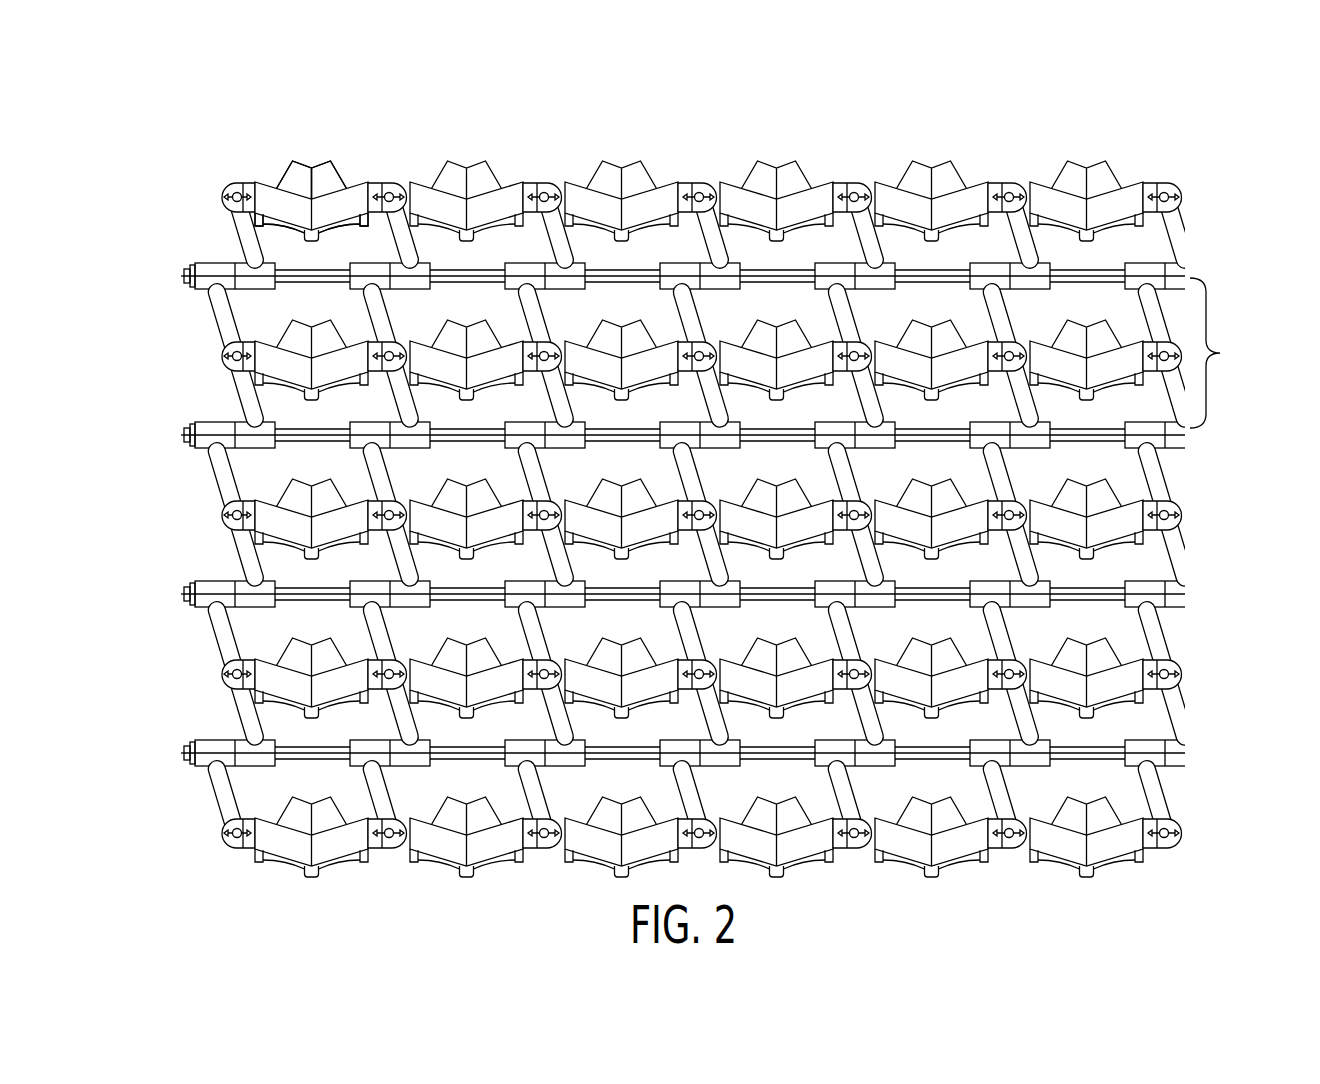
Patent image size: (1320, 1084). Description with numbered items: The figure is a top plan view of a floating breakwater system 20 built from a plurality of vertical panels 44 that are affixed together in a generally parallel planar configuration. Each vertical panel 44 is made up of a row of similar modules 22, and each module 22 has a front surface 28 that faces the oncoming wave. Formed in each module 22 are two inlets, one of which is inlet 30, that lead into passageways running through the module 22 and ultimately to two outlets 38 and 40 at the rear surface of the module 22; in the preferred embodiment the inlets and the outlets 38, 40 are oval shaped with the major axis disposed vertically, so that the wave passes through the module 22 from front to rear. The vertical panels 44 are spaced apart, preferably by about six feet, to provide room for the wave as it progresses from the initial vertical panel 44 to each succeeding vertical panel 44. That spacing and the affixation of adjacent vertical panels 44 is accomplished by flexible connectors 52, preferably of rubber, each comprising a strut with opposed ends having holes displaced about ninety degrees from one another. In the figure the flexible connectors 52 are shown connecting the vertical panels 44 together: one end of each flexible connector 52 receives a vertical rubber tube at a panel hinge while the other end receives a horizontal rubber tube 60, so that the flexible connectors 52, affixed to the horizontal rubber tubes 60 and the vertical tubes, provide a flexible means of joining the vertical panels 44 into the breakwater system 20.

The floating breakwater system 20 is at (597, 117).
The module 22 is at (663, 195).
The front surface 28 is at (343, 220).
The inlet 30 is at (282, 219).
The outlet 38 is at (300, 163).
The outlet 40 is at (324, 163).
The vertical panel 44 is at (1221, 353).
The flexible connector 52 is at (407, 258).
The horizontal rubber tube 60 is at (490, 272).